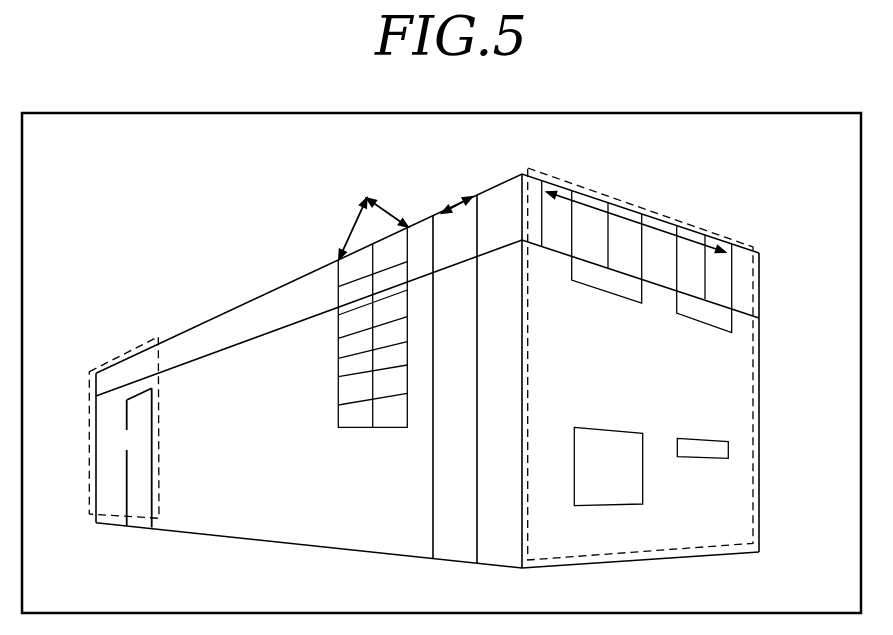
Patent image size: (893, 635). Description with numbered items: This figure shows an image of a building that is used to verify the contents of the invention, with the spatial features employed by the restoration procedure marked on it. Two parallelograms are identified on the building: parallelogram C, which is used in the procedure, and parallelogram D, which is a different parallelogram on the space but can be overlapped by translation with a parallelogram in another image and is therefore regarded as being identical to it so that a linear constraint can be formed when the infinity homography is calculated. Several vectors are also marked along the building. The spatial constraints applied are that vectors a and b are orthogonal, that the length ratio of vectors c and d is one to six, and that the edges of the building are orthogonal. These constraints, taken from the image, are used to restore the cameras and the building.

The vector a is at (349, 228).
The vector b is at (450, 207).
The vector c is at (457, 212).
The vector d is at (636, 225).
The parallelogram C is at (137, 457).
The parallelogram D is at (651, 427).